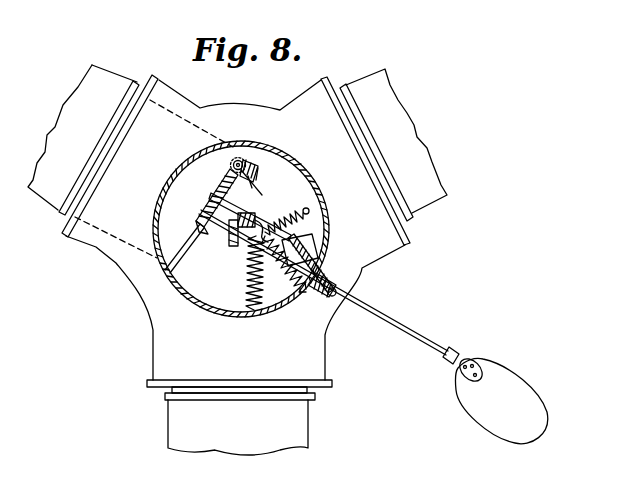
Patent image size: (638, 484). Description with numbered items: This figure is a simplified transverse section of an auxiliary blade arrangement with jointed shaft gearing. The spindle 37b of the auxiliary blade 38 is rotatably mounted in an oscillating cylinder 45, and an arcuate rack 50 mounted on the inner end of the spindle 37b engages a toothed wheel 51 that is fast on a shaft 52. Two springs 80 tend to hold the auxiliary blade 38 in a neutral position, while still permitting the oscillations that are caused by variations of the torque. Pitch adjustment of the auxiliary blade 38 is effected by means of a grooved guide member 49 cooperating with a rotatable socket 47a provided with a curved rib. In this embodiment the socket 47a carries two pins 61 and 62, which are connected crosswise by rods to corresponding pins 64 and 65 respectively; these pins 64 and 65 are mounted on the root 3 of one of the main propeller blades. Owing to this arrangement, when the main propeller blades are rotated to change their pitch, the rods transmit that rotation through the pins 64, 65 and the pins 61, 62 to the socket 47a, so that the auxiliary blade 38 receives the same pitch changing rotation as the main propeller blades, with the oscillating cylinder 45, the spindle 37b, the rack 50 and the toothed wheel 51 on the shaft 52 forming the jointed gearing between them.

The root 3 is at (108, 238).
The spindle 37b is at (383, 310).
The auxiliary blade 38 is at (502, 385).
The oscillating cylinder 45 is at (322, 290).
The rotatable socket 47a is at (330, 281).
The slide block 49 is at (302, 252).
The arcuate rack 50 is at (245, 182).
The toothed wheel 51 is at (248, 157).
The shaft 52 is at (258, 162).
The pin 61 is at (232, 247).
The pin 62 is at (247, 214).
The pin 64 is at (230, 178).
The pin 65 is at (218, 231).
The springs 80 is at (300, 218).